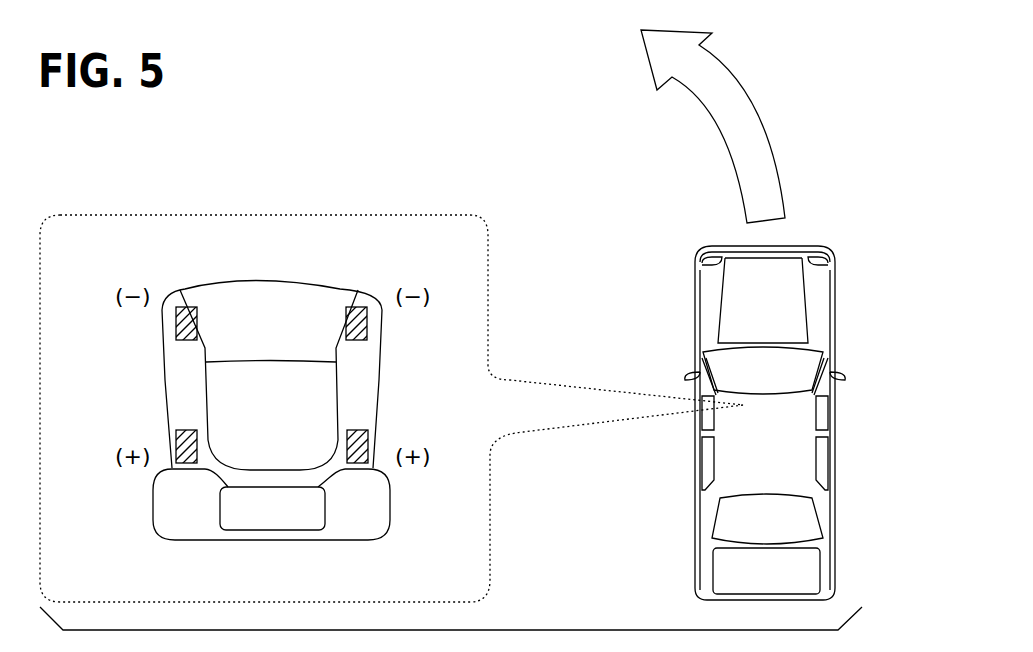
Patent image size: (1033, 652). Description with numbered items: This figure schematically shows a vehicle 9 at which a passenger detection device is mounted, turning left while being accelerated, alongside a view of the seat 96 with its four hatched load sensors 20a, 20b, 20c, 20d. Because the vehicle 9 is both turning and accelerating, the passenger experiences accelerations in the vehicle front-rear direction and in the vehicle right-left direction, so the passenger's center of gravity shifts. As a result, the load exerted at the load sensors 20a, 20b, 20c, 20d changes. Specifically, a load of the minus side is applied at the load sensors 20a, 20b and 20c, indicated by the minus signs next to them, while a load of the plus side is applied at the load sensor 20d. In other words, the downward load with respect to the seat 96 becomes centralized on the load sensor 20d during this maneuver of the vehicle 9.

The seat 96 is at (270, 275).
The load sensor 20a is at (367, 326).
The load sensor 20b is at (176, 326).
The load sensor 20c is at (183, 430).
The load sensor 20d is at (362, 430).
The vehicle 9 is at (858, 265).